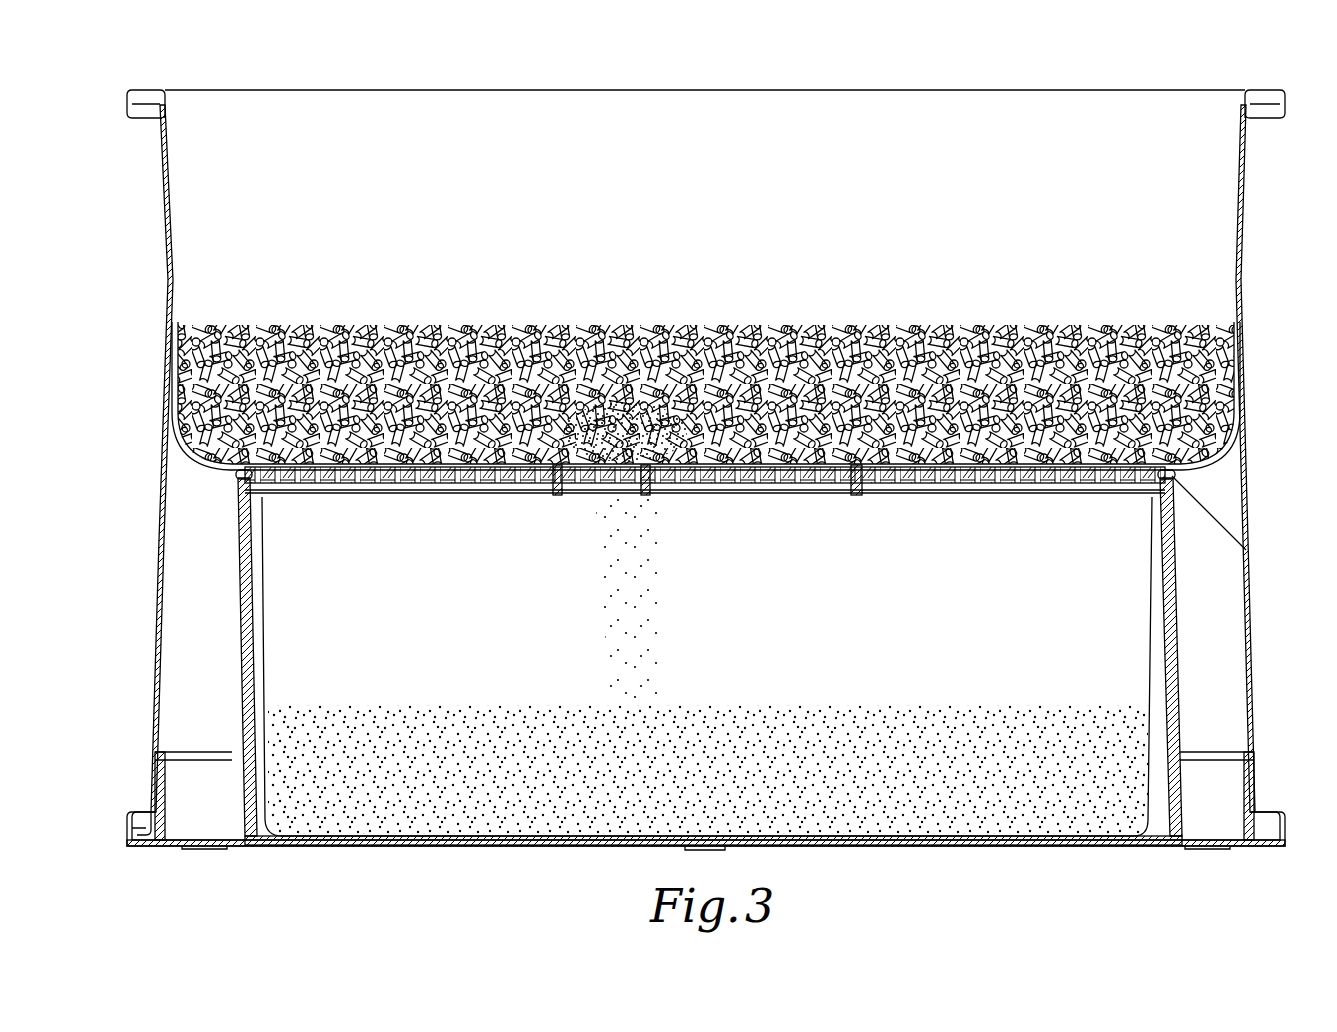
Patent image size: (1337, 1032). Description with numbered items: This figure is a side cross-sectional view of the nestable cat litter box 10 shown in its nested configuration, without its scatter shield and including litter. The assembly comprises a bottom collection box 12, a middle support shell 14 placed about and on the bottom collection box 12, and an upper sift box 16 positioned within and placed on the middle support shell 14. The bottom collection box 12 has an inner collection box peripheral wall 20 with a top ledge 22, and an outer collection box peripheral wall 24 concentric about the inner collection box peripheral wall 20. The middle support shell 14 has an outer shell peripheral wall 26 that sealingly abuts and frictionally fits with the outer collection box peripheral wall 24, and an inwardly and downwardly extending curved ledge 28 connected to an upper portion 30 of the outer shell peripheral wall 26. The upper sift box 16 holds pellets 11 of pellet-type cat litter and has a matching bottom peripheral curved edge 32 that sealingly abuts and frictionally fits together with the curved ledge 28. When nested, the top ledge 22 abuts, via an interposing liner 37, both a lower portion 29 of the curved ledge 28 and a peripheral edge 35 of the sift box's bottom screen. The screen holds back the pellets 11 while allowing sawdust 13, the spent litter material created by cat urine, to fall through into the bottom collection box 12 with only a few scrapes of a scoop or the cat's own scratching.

The nestable cat litter box 10 is at (805, 78).
The upper sift box 16 is at (1245, 213).
The middle support shell 14 is at (1253, 553).
The bottom collection box 12 is at (1180, 699).
The outer collection box peripheral wall 24 is at (158, 768).
The inner collection box peripheral wall 20 is at (238, 520).
The lower portion of the curved ledge 29 is at (243, 475).
The curved ledge 28 is at (215, 470).
The top ledge 22 is at (262, 448).
The outer shell peripheral wall 26 is at (172, 462).
The upper portion of the outer shell peripheral wall 30 is at (164, 378).
The pellets 11 is at (1178, 332).
The bottom peripheral curved edge 32 is at (228, 340).
The sawdust 13 is at (603, 455).
The peripheral edge of the bottom screen 35 is at (1158, 490).
The liner 37 is at (1152, 610).